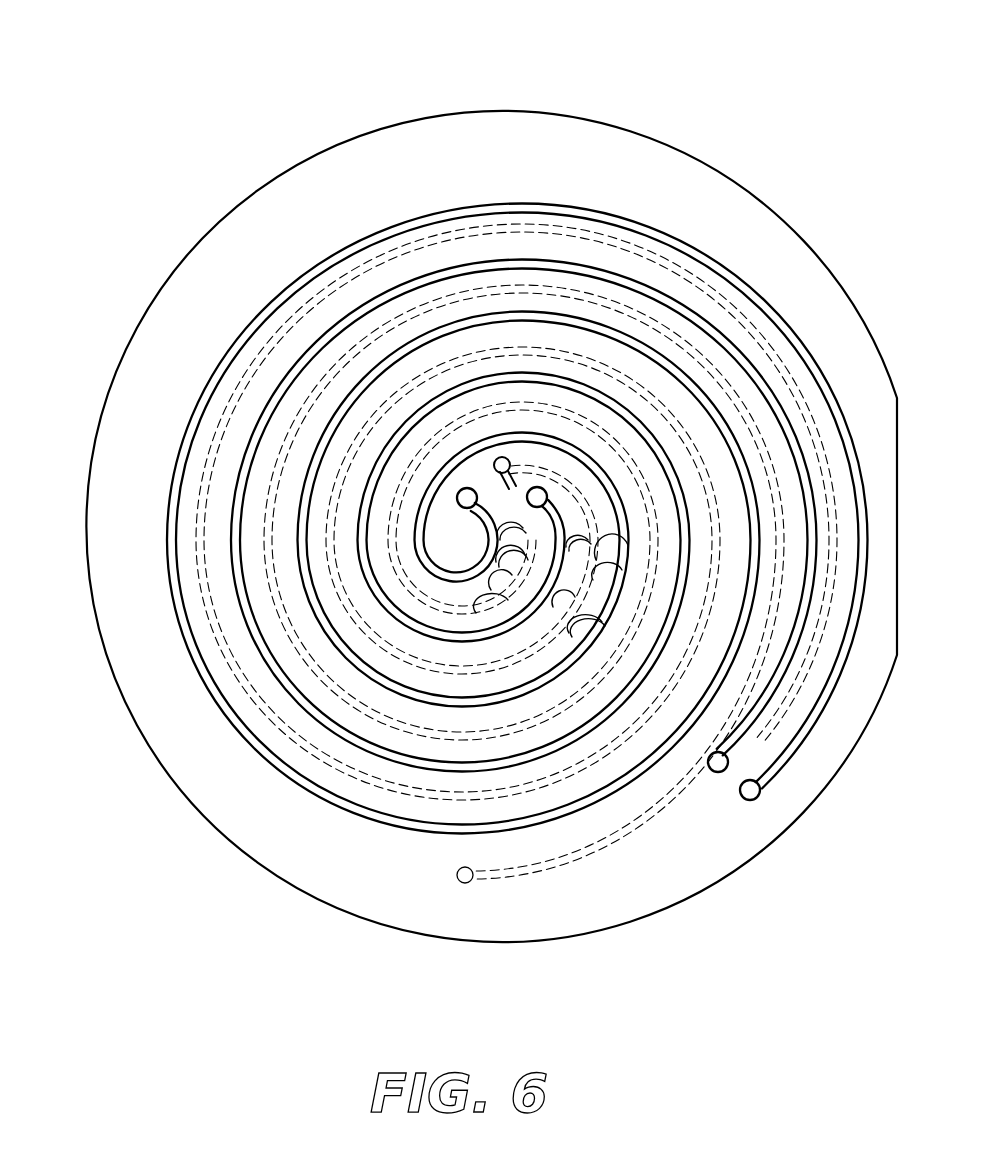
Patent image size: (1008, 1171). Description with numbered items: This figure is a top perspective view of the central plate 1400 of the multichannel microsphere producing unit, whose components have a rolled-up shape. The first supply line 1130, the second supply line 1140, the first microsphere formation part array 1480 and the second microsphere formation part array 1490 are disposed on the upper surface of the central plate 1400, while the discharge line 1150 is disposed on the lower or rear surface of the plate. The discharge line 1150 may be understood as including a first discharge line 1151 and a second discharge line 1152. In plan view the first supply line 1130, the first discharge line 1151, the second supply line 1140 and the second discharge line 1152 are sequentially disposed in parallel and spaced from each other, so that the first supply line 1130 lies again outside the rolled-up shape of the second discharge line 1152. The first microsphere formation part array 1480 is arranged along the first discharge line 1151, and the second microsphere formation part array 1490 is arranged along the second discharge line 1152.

The central plate 1400 is at (188, 54).
The first supply line 1130 is at (268, 762).
The second supply line 1140 is at (350, 740).
The discharge line 1150 is at (431, 553).
The first discharge line 1151 is at (400, 497).
The second discharge line 1152 is at (330, 530).
The first microsphere formation part array 1480 is at (485, 622).
The second microsphere formation part array 1490 is at (540, 618).